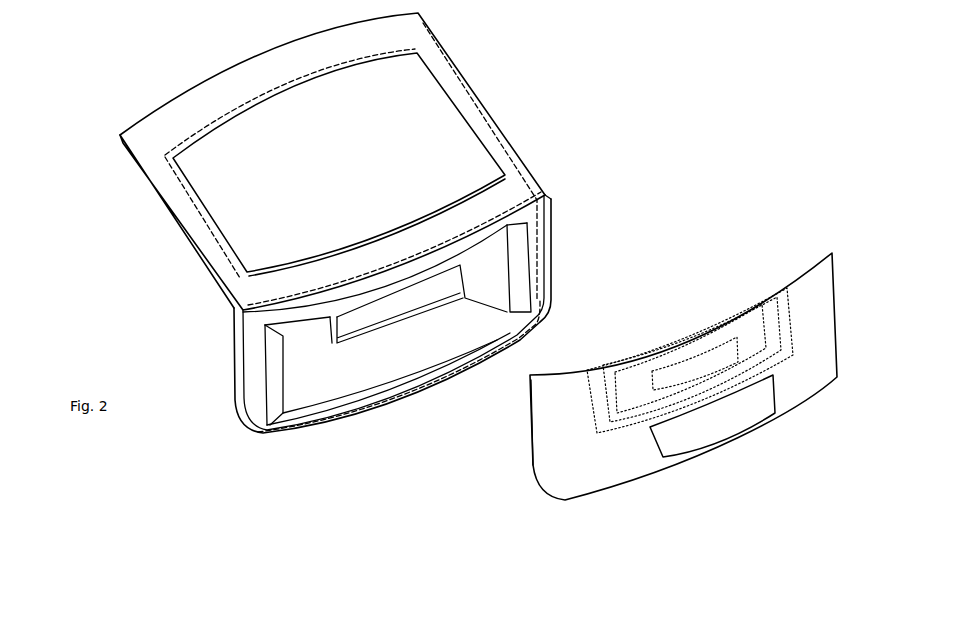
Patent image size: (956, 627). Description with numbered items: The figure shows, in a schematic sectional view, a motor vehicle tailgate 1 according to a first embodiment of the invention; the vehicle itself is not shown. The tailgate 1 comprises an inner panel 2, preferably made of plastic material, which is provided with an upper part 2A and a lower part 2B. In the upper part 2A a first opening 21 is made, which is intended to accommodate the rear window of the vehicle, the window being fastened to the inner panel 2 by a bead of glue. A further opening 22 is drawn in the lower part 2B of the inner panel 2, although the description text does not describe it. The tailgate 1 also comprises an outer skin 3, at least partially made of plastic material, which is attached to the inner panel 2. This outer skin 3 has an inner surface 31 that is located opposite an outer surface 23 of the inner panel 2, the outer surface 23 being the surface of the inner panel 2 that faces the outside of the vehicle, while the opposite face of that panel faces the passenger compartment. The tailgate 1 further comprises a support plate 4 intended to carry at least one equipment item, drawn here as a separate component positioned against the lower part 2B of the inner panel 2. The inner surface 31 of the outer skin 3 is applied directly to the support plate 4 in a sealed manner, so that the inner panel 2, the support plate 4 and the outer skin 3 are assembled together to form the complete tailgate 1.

The tailgate 1 is at (83, 58).
The inner panel 2 is at (208, 278).
The upper part of the inner panel 2A is at (158, 235).
The lower part of the inner panel 2B is at (232, 390).
The first opening 21 is at (433, 110).
The window in side wall 22 is at (452, 283).
The outer surface of the inner panel 23 is at (545, 220).
The outer skin 3 is at (533, 460).
The inner surface of the outer skin 31 is at (522, 398).
The support plate 4 is at (597, 368).